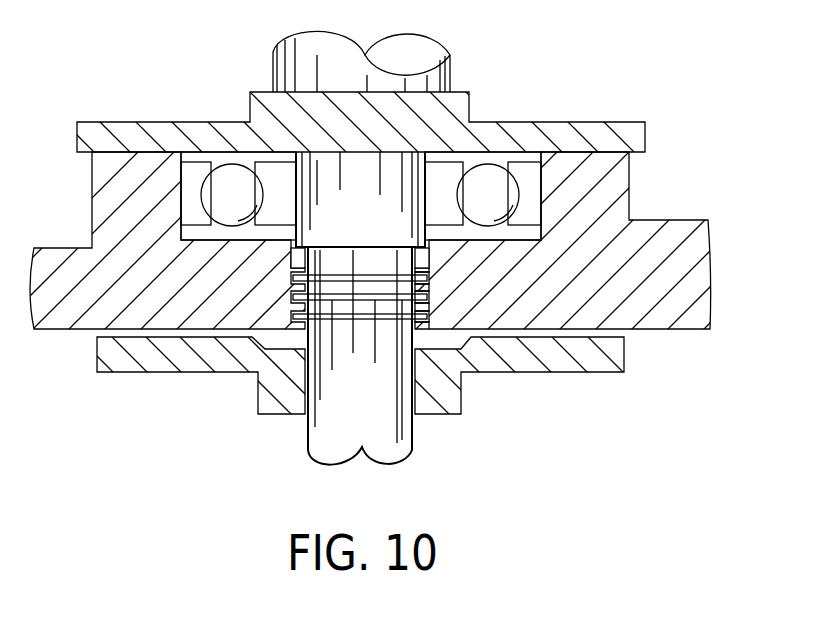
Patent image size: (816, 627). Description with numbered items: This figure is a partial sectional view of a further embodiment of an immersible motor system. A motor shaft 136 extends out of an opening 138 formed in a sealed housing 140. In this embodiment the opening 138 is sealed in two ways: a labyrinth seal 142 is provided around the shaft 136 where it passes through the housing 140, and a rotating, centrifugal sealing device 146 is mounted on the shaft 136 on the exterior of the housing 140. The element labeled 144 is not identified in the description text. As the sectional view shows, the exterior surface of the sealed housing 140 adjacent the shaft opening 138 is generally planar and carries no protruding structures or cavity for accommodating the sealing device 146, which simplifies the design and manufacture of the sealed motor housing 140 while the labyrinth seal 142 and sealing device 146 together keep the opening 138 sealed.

The motor shaft 136 is at (320, 435).
The opening 138 is at (285, 299).
The sealed housing 140 is at (603, 197).
The labyrinth seal 142 is at (440, 302).
The bearing 144 is at (442, 253).
The rotating/centrifugal sealing device 146 is at (215, 360).